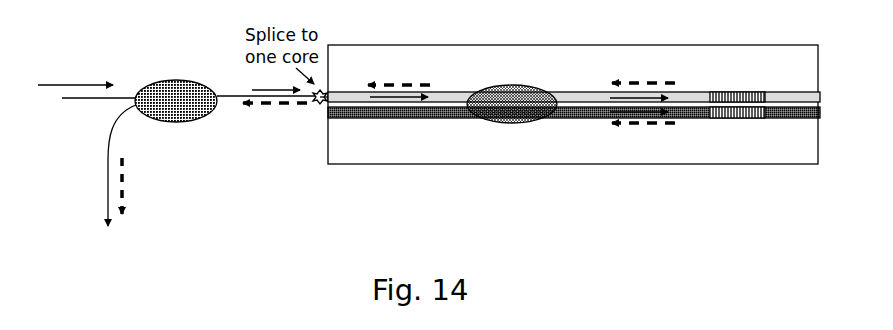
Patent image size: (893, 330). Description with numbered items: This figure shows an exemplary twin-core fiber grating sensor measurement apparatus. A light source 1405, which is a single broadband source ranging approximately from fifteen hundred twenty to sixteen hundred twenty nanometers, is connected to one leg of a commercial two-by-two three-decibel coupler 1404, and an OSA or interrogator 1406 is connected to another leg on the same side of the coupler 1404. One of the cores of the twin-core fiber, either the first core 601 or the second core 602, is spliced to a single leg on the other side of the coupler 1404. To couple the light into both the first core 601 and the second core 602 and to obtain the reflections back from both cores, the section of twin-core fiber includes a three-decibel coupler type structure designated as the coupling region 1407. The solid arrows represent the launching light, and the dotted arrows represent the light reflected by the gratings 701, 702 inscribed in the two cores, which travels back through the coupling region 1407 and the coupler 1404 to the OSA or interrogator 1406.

The light source 1405 is at (73, 73).
The 3 dB coupler 1404 is at (176, 90).
The OSA or interrogator 1406 is at (110, 187).
The coupling region 1407 is at (512, 83).
The first core 601 is at (689, 92).
The second core 602 is at (689, 118).
The grating 701 is at (735, 92).
The grating 702 is at (735, 120).